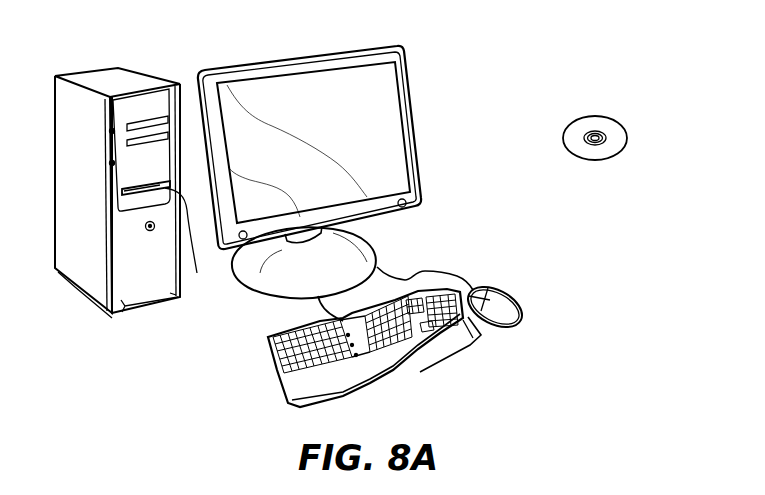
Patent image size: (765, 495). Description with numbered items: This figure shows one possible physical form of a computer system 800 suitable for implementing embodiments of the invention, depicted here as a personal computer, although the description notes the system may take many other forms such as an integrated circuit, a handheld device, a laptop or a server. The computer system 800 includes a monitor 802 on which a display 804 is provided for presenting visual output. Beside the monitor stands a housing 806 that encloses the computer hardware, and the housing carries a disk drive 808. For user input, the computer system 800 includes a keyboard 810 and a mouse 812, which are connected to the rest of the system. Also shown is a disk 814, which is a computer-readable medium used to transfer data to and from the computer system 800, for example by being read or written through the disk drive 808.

The computer system 800 is at (528, 30).
The monitor 802 is at (421, 148).
The display 804 is at (372, 87).
The housing 806 is at (102, 77).
The disk drive 808 is at (195, 242).
The keyboard 810 is at (280, 375).
The mouse 812 is at (516, 301).
The disk 814 is at (612, 117).